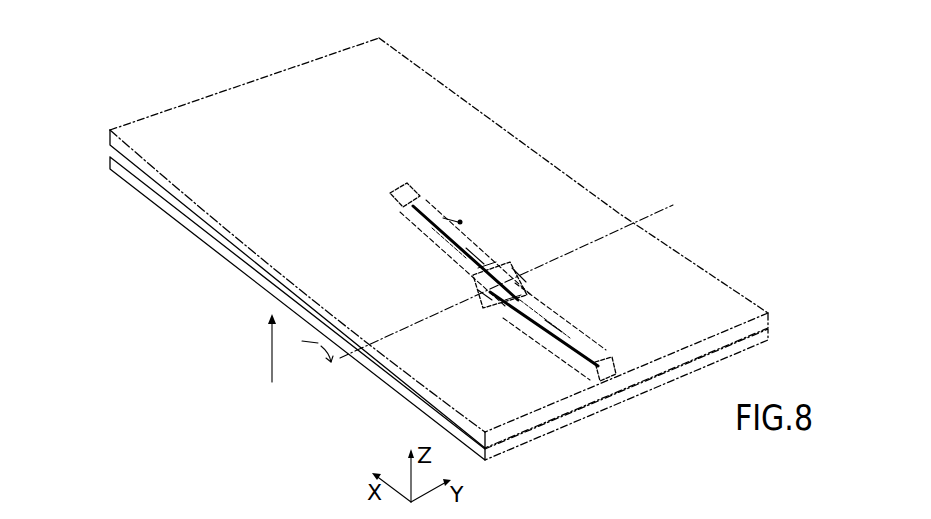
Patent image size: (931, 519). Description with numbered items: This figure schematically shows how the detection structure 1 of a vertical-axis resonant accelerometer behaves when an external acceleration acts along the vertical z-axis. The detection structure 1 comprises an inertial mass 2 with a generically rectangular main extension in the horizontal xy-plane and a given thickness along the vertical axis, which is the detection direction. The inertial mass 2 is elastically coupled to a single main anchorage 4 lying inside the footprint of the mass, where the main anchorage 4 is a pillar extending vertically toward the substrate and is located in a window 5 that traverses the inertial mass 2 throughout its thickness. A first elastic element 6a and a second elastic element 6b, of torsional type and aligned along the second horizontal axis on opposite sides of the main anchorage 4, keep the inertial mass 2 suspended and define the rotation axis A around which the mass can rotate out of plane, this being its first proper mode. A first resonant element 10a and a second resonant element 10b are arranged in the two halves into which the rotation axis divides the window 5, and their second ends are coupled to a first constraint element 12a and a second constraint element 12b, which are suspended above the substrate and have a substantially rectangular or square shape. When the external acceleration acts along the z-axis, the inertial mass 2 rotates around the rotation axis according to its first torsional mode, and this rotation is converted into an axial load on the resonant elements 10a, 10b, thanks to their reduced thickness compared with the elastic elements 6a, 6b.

The detection structure 1 is at (433, 238).
The inertial mass 2 is at (418, 88).
The main anchorage 4 is at (502, 278).
The window 5 is at (443, 218).
The first elastic element 6a is at (527, 282).
The second elastic element 6b is at (483, 290).
The first resonant element 10a is at (476, 265).
The second resonant element 10b is at (553, 318).
The first constraint element 12a is at (414, 204).
The second constraint element 12b is at (605, 372).